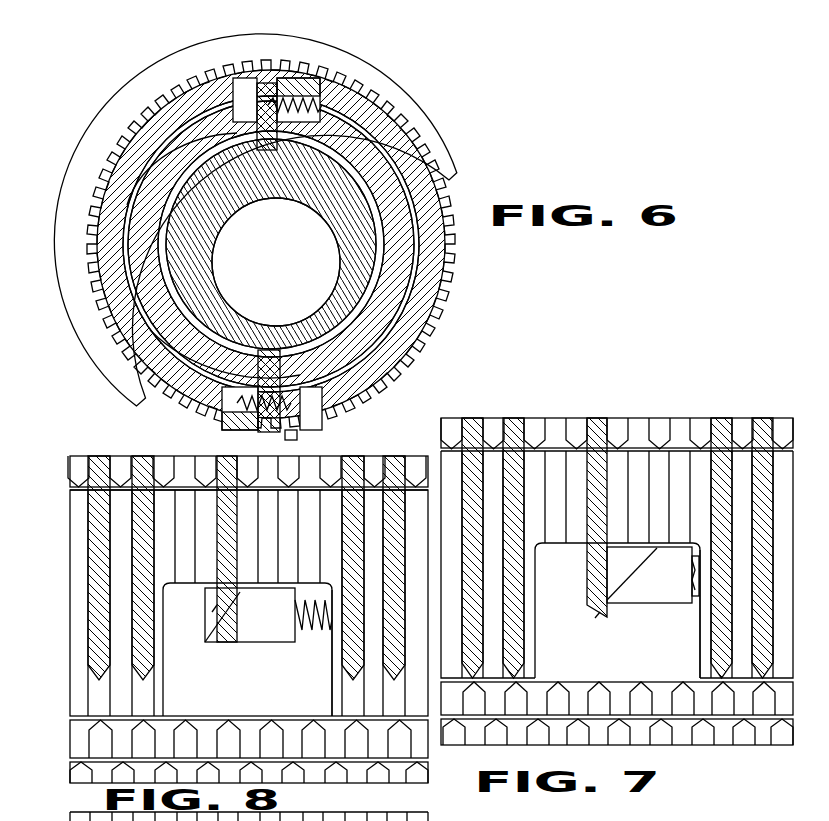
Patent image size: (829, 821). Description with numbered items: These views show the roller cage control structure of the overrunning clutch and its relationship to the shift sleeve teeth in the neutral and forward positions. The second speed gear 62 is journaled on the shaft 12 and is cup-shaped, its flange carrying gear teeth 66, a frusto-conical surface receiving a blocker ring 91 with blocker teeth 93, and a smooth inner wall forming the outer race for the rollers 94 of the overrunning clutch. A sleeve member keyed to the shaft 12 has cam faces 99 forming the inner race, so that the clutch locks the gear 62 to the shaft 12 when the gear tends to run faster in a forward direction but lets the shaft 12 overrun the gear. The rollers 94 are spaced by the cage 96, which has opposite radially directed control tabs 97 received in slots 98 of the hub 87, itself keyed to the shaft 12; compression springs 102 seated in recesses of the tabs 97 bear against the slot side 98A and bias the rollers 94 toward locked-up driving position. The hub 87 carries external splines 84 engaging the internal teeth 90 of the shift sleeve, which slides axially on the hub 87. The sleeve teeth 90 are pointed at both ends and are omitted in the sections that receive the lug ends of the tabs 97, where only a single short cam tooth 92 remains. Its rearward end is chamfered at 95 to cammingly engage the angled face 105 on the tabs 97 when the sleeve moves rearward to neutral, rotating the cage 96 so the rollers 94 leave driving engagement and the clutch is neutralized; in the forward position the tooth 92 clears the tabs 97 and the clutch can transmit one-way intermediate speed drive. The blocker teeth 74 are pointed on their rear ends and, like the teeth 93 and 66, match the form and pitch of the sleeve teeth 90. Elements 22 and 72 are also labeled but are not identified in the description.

In FIG. 6, the shaft 12 is at (292, 230).
In FIG. 6, the ring 22 is at (293, 174).
In FIG. 8, the second speed gear 62 is at (70, 776).
In FIG. 8, the gear teeth 66 is at (378, 776).
In FIG. 7, the gear teeth 66 is at (748, 740).
In FIG. 8, the upper toothed plate 72 is at (70, 471).
In FIG. 7, the upper toothed plate 72 is at (617, 434).
In FIG. 8, the blocker teeth 74 is at (207, 463).
In FIG. 7, the blocker teeth 74 is at (702, 424).
In FIG. 6, the external splines 84 is at (271, 244).
In FIG. 8, the external splines 84 is at (117, 646).
In FIG. 7, the external splines 84 is at (448, 472).
In FIG. 6, the hub 87 is at (418, 150).
In FIG. 8, the hub 87 is at (70, 616).
In FIG. 8, the internal teeth 90 is at (153, 617).
In FIG. 7, the internal teeth 90 is at (480, 508).
In FIG. 8, the blocker ring 91 is at (70, 745).
In FIG. 6, the cam tooth 92 is at (267, 77).
In FIG. 8, the cam tooth 92 is at (233, 553).
In FIG. 7, the cam tooth 92 is at (600, 492).
In FIG. 8, the blocker teeth 93 is at (272, 730).
In FIG. 7, the blocker teeth 93 is at (598, 690).
In FIG. 6, the rollers 94 is at (414, 243).
In FIG. 8, the chamfered portion 95 is at (216, 606).
In FIG. 7, the chamfered portion 95 is at (597, 612).
In FIG. 6, the cage 96 is at (170, 163).
In FIG. 6, the control tabs 97 is at (290, 78).
In FIG. 8, the control tabs 97 is at (268, 634).
In FIG. 7, the control tabs 97 is at (669, 598).
In FIG. 6, the slots 98 is at (233, 77).
In FIG. 8, the slots 98 is at (214, 681).
In FIG. 7, the slots 98 is at (624, 649).
In FIG. 8, the slot side 98A is at (334, 670).
In FIG. 7, the slot side 98A is at (700, 634).
In FIG. 6, the cam faces 99 is at (384, 332).
In FIG. 6, the compression springs 102 is at (317, 80).
In FIG. 8, the compression springs 102 is at (318, 626).
In FIG. 7, the compression springs 102 is at (696, 600).
In FIG. 8, the chamfered portion 105 is at (234, 600).
In FIG. 7, the chamfered portion 105 is at (637, 571).